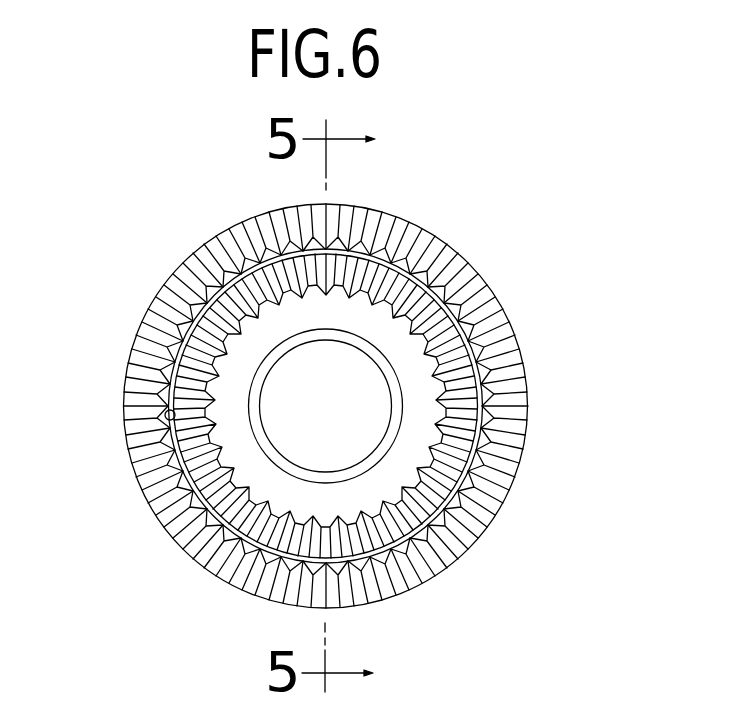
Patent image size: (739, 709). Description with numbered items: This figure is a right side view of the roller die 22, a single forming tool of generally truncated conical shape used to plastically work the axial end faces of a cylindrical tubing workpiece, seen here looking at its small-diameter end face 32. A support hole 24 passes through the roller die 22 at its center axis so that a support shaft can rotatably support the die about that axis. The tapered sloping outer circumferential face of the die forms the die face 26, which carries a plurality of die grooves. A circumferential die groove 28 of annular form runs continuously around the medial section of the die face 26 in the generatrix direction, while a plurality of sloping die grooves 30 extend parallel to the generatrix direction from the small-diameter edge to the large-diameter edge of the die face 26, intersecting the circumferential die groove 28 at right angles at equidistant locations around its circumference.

The roller die 22 is at (487, 228).
The support hole 24 is at (387, 390).
The die face 26 is at (140, 335).
The circumferential die groove 28 is at (166, 418).
The sloping die grooves 30 is at (227, 280).
The small-diameter end face 32 is at (500, 293).